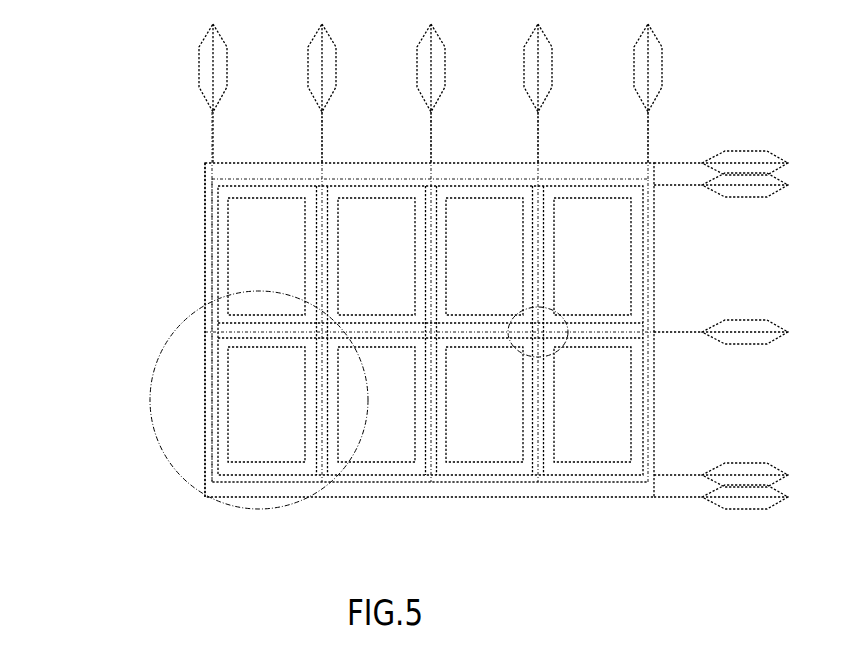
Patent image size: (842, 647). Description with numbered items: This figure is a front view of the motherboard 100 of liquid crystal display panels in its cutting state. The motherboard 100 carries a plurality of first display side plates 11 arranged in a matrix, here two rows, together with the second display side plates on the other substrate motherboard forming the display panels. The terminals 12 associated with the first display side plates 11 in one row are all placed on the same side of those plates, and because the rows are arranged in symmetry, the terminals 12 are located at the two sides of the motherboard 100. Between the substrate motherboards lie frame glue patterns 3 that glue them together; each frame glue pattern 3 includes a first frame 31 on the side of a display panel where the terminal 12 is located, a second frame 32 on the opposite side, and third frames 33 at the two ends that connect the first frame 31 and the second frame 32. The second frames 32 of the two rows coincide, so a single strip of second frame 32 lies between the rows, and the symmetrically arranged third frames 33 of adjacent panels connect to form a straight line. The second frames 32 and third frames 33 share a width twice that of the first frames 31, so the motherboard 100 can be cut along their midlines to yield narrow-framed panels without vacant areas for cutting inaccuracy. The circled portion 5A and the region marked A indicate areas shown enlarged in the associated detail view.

The motherboard of liquid crystal display panels 100 is at (143, 277).
The terminal 12 is at (210, 176).
The first display side plate 11 is at (252, 253).
The frame glue pattern 3 is at (212, 375).
The second frame 32 is at (260, 333).
The third frame 33 is at (208, 435).
The first frame 31 is at (215, 480).
The detail region A is at (557, 320).
The circled portion 5A is at (160, 355).